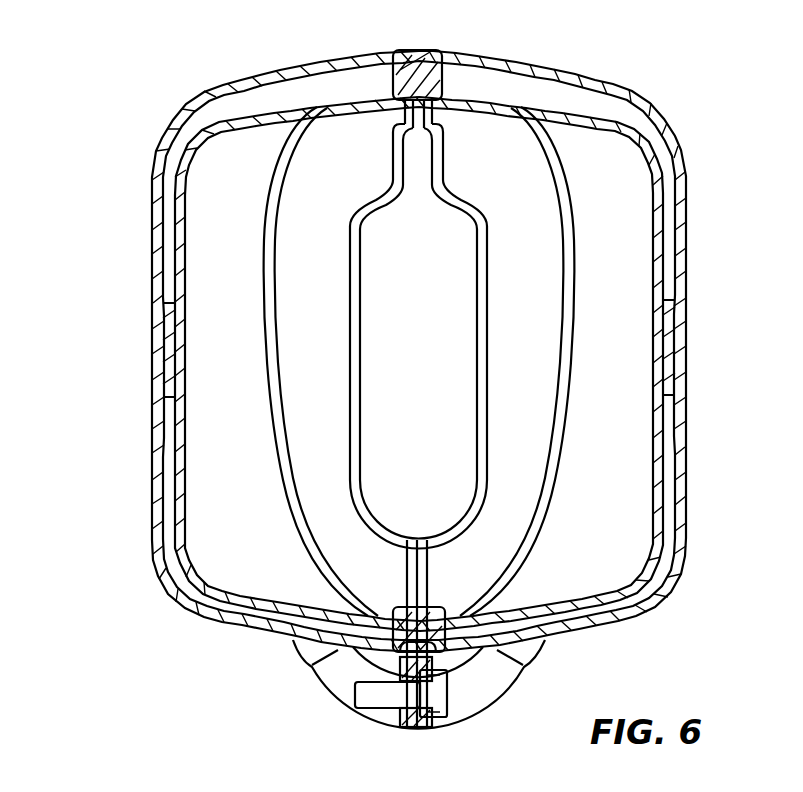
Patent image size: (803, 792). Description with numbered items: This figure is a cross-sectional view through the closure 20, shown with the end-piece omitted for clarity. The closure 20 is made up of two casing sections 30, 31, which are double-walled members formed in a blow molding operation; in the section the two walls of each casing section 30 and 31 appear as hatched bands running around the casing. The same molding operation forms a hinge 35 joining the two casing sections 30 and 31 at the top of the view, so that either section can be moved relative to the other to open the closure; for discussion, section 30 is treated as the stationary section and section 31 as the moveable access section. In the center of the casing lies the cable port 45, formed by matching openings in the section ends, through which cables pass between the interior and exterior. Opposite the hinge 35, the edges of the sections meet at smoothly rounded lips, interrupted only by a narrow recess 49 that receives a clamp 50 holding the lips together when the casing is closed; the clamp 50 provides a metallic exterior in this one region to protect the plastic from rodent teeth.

The closure 20 is at (155, 103).
The casing section 30 is at (683, 268).
The casing section 31 is at (152, 505).
The hinge 35 is at (418, 50).
The cable port 45 is at (378, 290).
The recess 49 is at (503, 680).
The clamp 50 is at (397, 716).